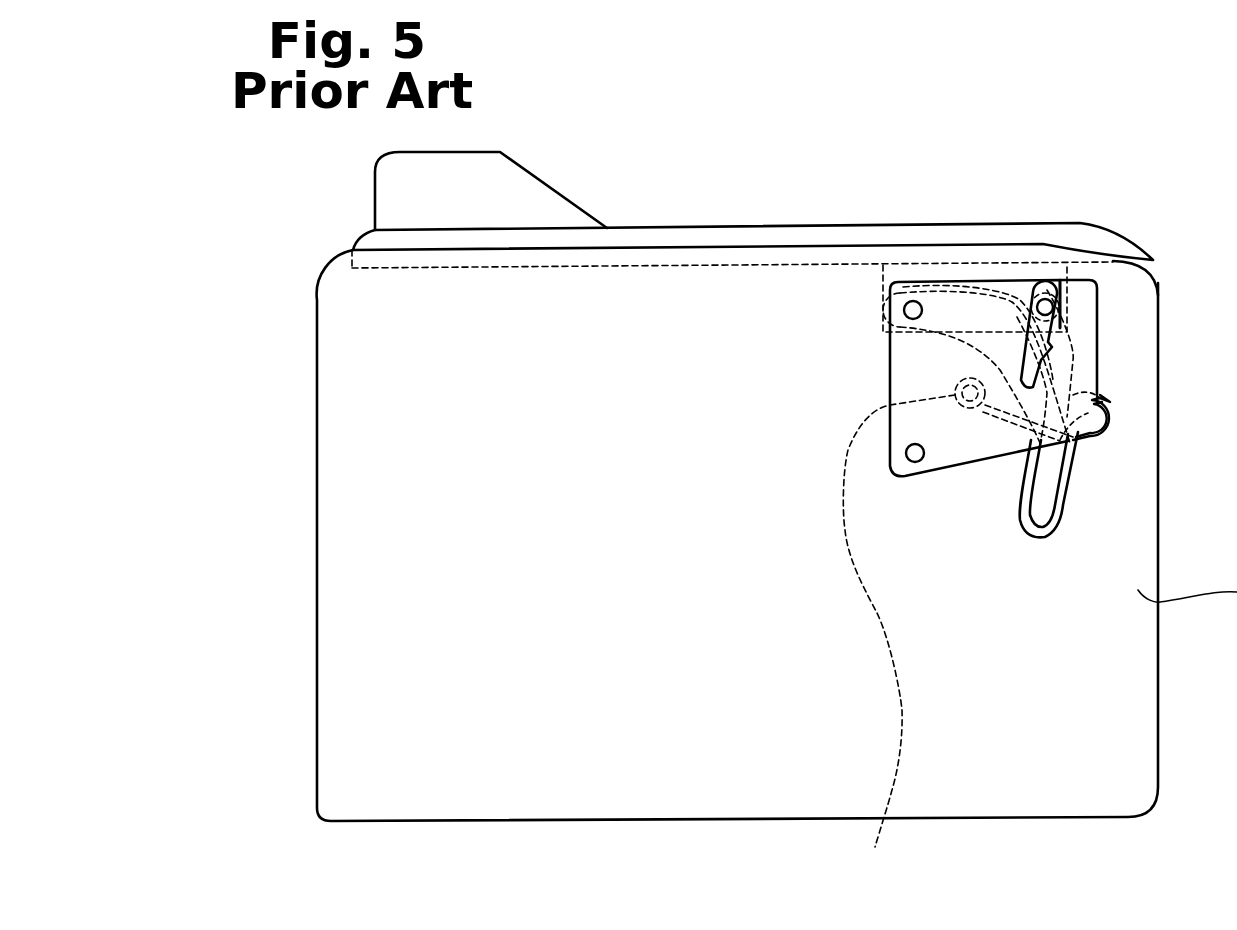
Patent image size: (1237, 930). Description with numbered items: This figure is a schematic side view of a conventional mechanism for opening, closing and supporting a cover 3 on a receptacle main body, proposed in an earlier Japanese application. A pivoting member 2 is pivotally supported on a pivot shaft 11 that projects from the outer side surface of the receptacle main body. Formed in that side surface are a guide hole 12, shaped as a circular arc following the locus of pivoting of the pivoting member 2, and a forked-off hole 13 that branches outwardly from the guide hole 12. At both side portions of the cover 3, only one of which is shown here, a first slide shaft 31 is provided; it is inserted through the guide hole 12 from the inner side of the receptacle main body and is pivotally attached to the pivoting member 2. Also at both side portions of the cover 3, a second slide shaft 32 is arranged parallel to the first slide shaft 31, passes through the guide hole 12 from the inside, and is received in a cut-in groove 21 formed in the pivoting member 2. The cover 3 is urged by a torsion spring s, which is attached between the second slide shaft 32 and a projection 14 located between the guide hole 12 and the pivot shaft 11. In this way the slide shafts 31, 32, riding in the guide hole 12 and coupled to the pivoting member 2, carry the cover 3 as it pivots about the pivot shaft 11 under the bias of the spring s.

The pivoting member 2 is at (1087, 310).
The cover 3 is at (680, 237).
The pivot shaft 11 is at (920, 462).
The guide hole 12 is at (1055, 487).
The forked-off hole 13 is at (1027, 303).
The projection 14 is at (958, 633).
The cut-in groove 21 is at (1047, 343).
The first slide shaft 31 is at (904, 312).
The second slide shaft 32 is at (1035, 285).
The torsion spring s is at (1117, 430).